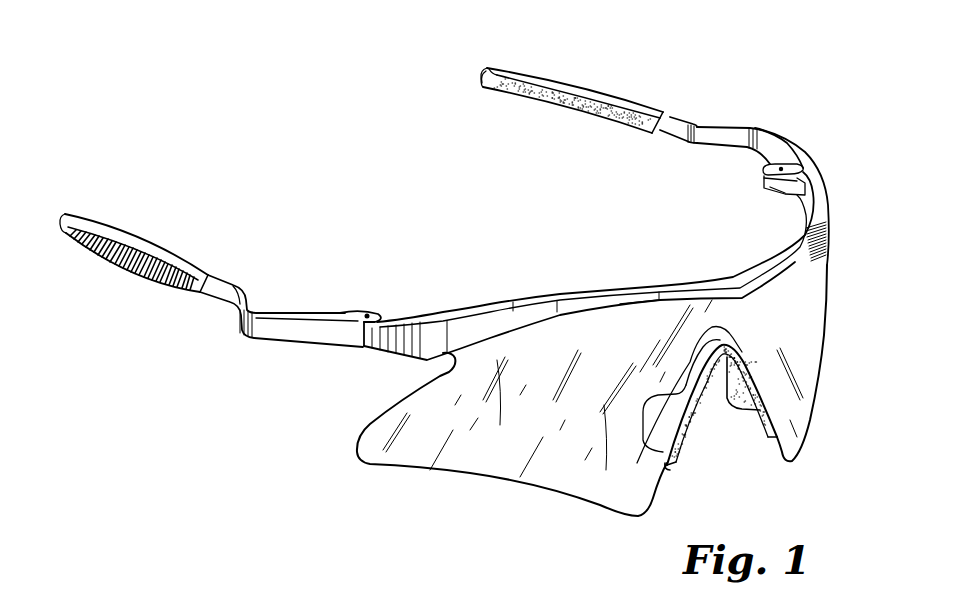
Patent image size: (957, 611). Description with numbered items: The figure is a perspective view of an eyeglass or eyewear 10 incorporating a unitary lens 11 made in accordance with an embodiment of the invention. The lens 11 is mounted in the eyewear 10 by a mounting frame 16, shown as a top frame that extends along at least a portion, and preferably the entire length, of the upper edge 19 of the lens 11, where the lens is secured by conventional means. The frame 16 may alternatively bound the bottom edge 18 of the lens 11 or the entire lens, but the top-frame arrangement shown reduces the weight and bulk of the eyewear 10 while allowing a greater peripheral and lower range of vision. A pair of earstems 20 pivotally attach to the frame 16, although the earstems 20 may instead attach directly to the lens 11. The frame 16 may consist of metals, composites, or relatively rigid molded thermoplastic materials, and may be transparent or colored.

The eyewear 10 is at (719, 74).
The unitary lens 11 is at (829, 345).
The frame 16 is at (535, 300).
The bottom edge 18 is at (507, 477).
The upper edge 19 is at (628, 300).
The earstems 20 is at (208, 300).